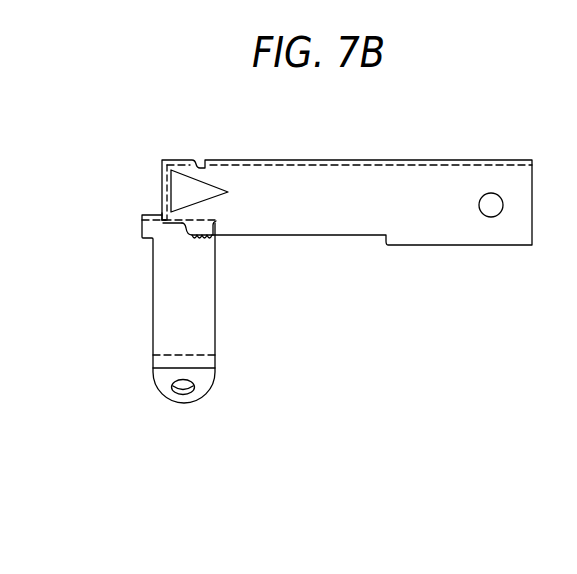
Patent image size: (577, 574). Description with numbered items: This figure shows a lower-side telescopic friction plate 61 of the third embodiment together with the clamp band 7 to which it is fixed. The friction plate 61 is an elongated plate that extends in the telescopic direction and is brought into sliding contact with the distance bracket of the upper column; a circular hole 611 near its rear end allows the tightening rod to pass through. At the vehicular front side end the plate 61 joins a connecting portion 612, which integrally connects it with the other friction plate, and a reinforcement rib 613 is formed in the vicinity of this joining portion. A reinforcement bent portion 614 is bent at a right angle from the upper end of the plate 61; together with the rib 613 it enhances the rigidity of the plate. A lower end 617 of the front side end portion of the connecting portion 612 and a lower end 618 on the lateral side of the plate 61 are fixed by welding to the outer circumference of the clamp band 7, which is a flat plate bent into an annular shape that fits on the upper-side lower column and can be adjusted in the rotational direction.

The lower-side telescopic friction plate 61 is at (350, 183).
The circular hole 611 is at (494, 200).
The connecting portion 612 is at (163, 167).
The reinforcement rib 613 is at (178, 184).
The reinforcement bent portion 614 is at (257, 160).
The lower end of the connection portion 617 is at (157, 216).
The lower end of the friction plate 618 is at (216, 221).
The clamp band 7 is at (158, 295).